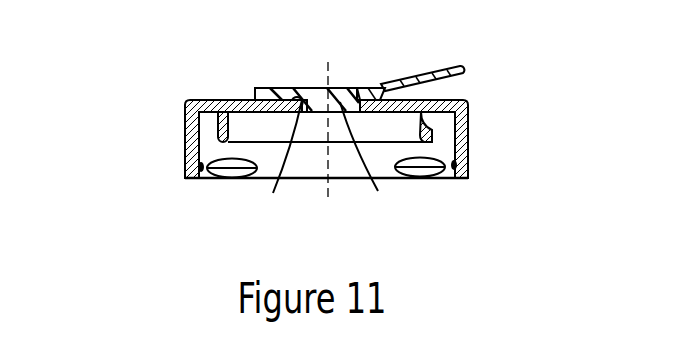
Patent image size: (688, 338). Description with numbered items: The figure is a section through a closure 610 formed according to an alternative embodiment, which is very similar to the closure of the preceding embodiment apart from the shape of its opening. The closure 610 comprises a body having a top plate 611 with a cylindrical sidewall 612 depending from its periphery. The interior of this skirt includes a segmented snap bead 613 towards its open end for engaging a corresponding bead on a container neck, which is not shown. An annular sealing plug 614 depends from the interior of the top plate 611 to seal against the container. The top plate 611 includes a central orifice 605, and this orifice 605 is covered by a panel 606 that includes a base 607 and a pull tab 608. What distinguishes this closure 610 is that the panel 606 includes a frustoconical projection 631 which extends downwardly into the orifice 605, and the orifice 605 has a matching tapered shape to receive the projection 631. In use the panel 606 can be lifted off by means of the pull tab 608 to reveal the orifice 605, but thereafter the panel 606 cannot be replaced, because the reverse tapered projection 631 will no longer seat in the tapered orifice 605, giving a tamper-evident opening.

The closure 610 is at (133, 91).
The top plate 611 is at (208, 99).
The cylindrical sidewall 612 is at (185, 156).
The segmented snap bead 613 is at (200, 173).
The annular sealing plug 614 is at (433, 124).
The orifice 605 is at (280, 159).
The frustoconical projection 631 is at (363, 160).
The base 607 is at (347, 88).
The panel 606 is at (370, 80).
The pull tab 608 is at (440, 68).